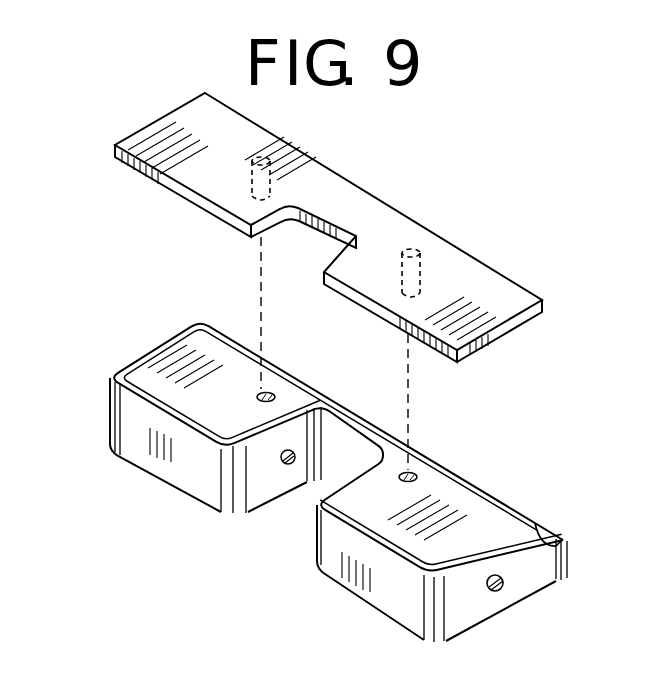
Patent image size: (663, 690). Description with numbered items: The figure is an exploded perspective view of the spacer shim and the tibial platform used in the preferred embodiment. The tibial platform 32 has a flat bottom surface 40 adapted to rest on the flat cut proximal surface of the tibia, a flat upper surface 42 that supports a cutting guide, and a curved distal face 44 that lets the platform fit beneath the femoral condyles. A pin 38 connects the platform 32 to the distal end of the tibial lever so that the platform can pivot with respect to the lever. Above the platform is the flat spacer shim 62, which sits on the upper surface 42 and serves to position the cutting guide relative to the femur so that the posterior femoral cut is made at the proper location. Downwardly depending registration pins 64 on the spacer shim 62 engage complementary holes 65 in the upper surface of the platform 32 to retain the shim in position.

The tibial platform 32 is at (100, 424).
The pin 38 is at (505, 583).
The flat bottom surface 40 is at (485, 623).
The flat upper surface 42 is at (488, 512).
The curved distal face 44 is at (548, 541).
The spacer shim 62 is at (527, 300).
The registration pins 64 is at (272, 182).
The holes 65 is at (276, 393).